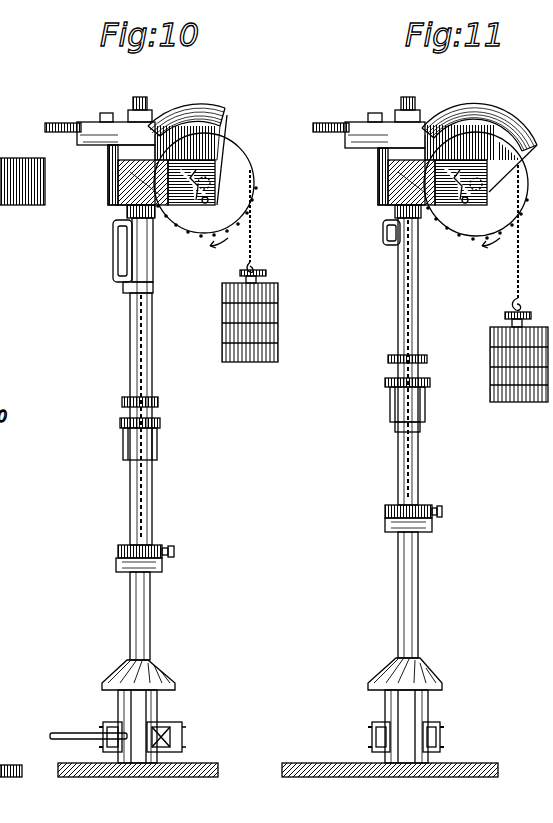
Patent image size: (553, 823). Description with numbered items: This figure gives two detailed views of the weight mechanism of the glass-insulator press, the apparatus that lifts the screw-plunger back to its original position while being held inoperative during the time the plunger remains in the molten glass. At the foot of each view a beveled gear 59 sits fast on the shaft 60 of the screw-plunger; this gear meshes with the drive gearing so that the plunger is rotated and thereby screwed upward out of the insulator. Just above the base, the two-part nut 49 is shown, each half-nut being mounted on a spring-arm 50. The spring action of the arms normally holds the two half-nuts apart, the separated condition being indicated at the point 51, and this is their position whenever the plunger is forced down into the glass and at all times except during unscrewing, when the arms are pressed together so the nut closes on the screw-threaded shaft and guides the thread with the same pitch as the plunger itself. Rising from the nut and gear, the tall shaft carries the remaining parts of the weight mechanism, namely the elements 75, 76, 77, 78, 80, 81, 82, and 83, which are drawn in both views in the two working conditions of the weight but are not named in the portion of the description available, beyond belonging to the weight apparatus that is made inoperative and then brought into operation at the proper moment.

In FIG. 10, the two-part nut 49 is at (110, 722).
In FIG. 11, the two-part nut 49 is at (378, 722).
In FIG. 10, the spring-arm 50 is at (170, 722).
In FIG. 10, the point of separation of the half-nuts 51 is at (75, 740).
In FIG. 10, the beveled gear 59 is at (162, 672).
In FIG. 11, the beveled gear 59 is at (382, 673).
In FIG. 10, the shaft 60 is at (130, 626).
In FIG. 11, the shaft 60 is at (398, 607).
In FIG. 10, the screw shaft 75 is at (152, 468).
In FIG. 11, the screw shaft 75 is at (400, 458).
In FIG. 10, the weight 76 is at (270, 335).
In FIG. 11, the weight 76 is at (496, 376).
In FIG. 10, the adjustable collar 77 is at (118, 566).
In FIG. 11, the adjustable collar 77 is at (385, 521).
In FIG. 10, the ratchet wheel 78 is at (249, 175).
In FIG. 11, the ratchet wheel 78 is at (505, 205).
In FIG. 10, the nut 80 is at (127, 213).
In FIG. 11, the nut 80 is at (395, 213).
In FIG. 10, the hook 81 is at (266, 270).
In FIG. 11, the hook 81 is at (505, 314).
In FIG. 10, the brake band 82 is at (198, 145).
In FIG. 11, the brake band 82 is at (466, 140).
In FIG. 10, the pawl 83 is at (196, 206).
In FIG. 11, the pawl 83 is at (453, 206).